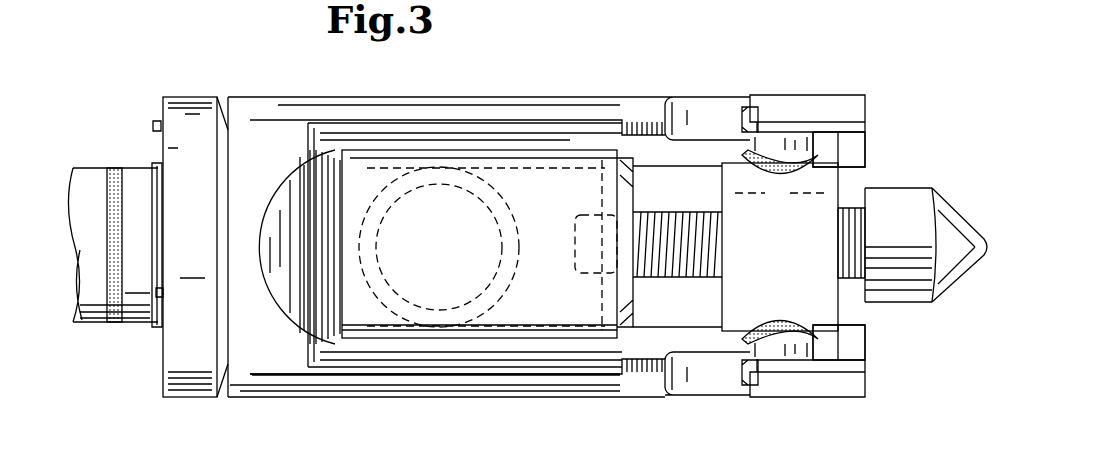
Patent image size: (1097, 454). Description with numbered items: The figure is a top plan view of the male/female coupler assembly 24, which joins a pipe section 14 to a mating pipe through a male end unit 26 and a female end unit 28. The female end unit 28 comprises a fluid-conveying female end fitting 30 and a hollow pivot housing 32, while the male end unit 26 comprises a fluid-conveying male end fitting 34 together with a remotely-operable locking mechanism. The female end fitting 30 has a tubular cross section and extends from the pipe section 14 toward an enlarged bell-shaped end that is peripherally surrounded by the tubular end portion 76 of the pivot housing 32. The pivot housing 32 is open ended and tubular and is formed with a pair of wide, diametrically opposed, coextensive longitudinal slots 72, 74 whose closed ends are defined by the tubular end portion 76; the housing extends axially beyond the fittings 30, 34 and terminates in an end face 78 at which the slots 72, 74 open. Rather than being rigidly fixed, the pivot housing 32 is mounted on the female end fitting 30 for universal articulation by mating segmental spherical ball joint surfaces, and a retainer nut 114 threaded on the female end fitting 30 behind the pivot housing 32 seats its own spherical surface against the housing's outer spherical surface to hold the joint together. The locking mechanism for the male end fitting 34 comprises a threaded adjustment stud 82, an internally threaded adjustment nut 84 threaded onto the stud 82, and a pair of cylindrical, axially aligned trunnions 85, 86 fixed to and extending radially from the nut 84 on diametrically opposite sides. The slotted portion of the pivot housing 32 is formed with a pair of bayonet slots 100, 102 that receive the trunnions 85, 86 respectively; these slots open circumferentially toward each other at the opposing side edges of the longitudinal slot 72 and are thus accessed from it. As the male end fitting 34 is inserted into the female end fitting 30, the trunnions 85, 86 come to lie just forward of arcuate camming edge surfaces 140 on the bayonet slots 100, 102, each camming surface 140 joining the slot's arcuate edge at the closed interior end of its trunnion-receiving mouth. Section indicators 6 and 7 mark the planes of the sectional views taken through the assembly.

The section line 6- 6 is at (786, 427).
The section line 7- 7 is at (998, 216).
The pipe section 14 is at (88, 168).
The male/female coupler assembly 24 is at (469, 79).
The male end unit 26 is at (581, 139).
The female end unit 28 is at (276, 96).
The female end fitting 30 is at (140, 168).
The pivot housing 32 is at (353, 97).
The male end fitting 34 is at (558, 340).
The longitudinal slot 72 is at (862, 150).
The longitudinal slot 74 is at (672, 168).
The tubular end portion 76 is at (310, 258).
The end face 78 is at (866, 112).
The threaded adjustment stud 82 is at (913, 189).
The adjustment nut 84 is at (794, 221).
The trunnion 85 is at (750, 340).
The trunnion 86 is at (760, 148).
The bayonet slot 100 is at (693, 390).
The bayonet slot 102 is at (701, 100).
The retainer nut 114 is at (183, 97).
The arcuate camming edge surface 140 is at (748, 107).